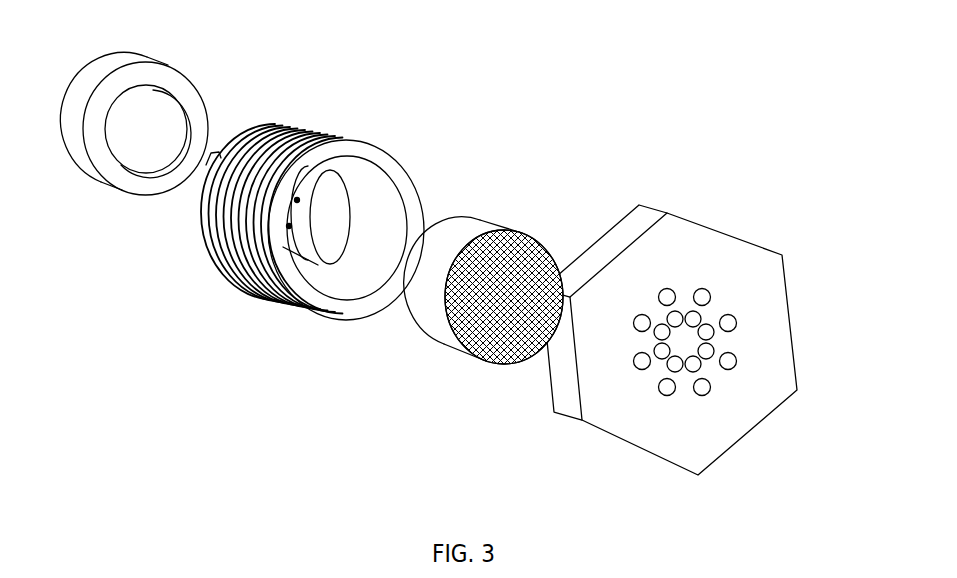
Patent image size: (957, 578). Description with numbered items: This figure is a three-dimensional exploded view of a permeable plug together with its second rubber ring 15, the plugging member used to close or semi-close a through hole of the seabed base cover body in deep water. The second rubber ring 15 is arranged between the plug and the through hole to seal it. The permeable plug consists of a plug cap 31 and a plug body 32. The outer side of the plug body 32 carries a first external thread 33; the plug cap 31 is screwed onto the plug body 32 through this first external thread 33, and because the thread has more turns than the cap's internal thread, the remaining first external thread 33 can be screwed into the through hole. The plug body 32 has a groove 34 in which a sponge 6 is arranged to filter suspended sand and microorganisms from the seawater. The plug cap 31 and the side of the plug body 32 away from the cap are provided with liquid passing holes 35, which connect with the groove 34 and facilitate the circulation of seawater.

The second rubber ring 15 is at (140, 196).
The plug cap 31 is at (727, 234).
The plug body 32 is at (410, 195).
The first external thread 33 is at (320, 124).
The groove 34 is at (355, 253).
The liquid passing hole 35 is at (730, 322).
The sponge 6 is at (490, 223).